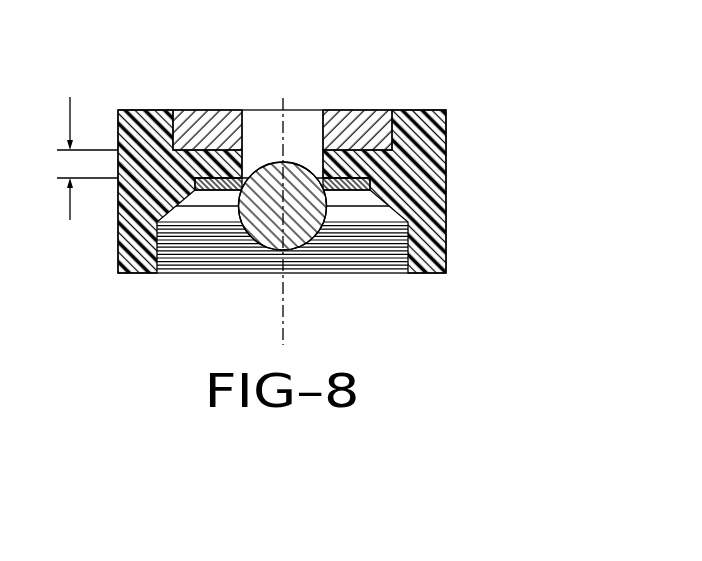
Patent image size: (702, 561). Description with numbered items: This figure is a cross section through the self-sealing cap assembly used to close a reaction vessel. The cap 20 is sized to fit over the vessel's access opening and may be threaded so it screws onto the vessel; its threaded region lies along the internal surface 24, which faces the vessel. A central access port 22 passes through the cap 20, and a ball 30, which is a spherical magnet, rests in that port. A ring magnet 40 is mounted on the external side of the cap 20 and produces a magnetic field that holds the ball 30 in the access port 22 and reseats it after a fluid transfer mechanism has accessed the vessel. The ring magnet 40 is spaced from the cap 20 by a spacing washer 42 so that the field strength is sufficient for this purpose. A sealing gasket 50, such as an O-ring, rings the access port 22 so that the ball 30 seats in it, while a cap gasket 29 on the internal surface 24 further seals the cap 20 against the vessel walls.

The cap 20 is at (114, 232).
The access port 22 is at (268, 110).
The internal surface 24 is at (168, 197).
The cap gasket 29 is at (400, 212).
The ball 30 is at (298, 220).
The ring magnet 40 is at (203, 110).
The spacing washer 42 is at (87, 158).
The sealing gasket 50 is at (343, 196).